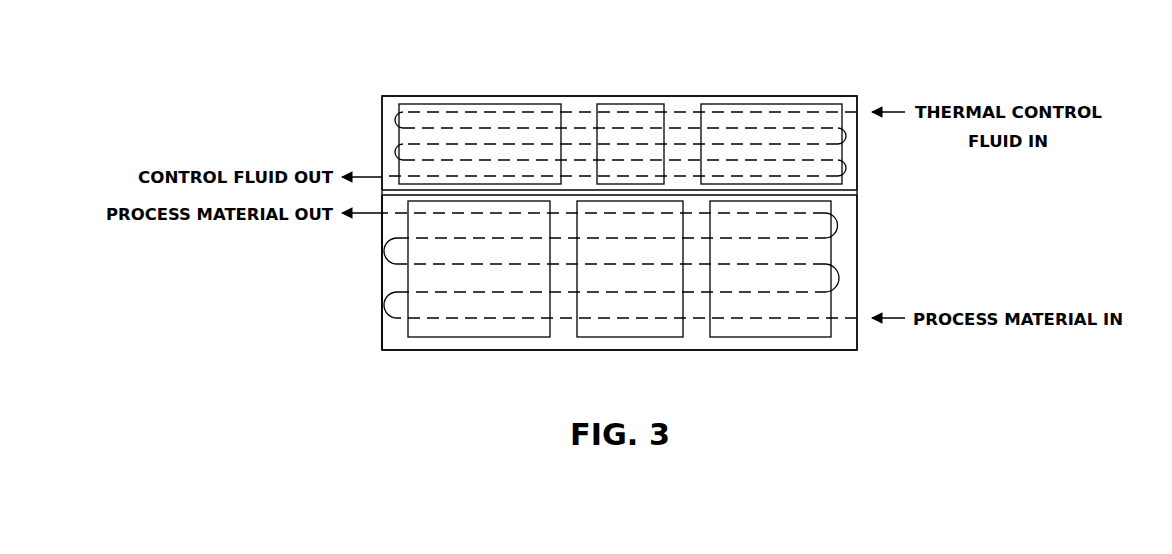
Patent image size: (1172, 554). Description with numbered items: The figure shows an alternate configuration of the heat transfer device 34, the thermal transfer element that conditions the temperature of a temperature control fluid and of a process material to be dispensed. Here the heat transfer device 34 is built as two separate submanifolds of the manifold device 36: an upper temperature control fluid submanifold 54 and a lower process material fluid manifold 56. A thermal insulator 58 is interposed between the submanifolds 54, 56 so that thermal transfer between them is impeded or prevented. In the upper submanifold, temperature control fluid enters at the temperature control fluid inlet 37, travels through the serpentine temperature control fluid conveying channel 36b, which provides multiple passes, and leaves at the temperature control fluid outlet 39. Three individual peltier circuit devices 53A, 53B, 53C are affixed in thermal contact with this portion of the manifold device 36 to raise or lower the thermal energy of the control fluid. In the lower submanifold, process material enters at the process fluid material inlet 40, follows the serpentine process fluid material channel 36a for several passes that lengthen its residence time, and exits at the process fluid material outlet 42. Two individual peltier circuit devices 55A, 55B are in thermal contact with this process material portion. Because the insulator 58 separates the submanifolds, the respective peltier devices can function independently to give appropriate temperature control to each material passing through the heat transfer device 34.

The heat transfer device 34 is at (851, 86).
The manifold device 36 is at (379, 314).
The serpentine process fluid material channel 36a is at (825, 266).
The temperature control fluid conveying channel 36b is at (691, 106).
The temperature control fluid inlet 37 is at (860, 112).
The temperature control fluid outlet 39 is at (381, 177).
The process fluid material inlet 40 is at (858, 320).
The process fluid material outlet 42 is at (373, 215).
The peltier circuit device 53A is at (528, 96).
The peltier circuit device 53B is at (607, 102).
The peltier circuit device 53C is at (773, 102).
The temperature control fluid submanifold 54 is at (858, 153).
The peltier circuit device 55A is at (477, 341).
The peltier circuit device 55B is at (674, 342).
The process material fluid manifold 56 is at (858, 236).
The thermal insulator 58 is at (858, 192).